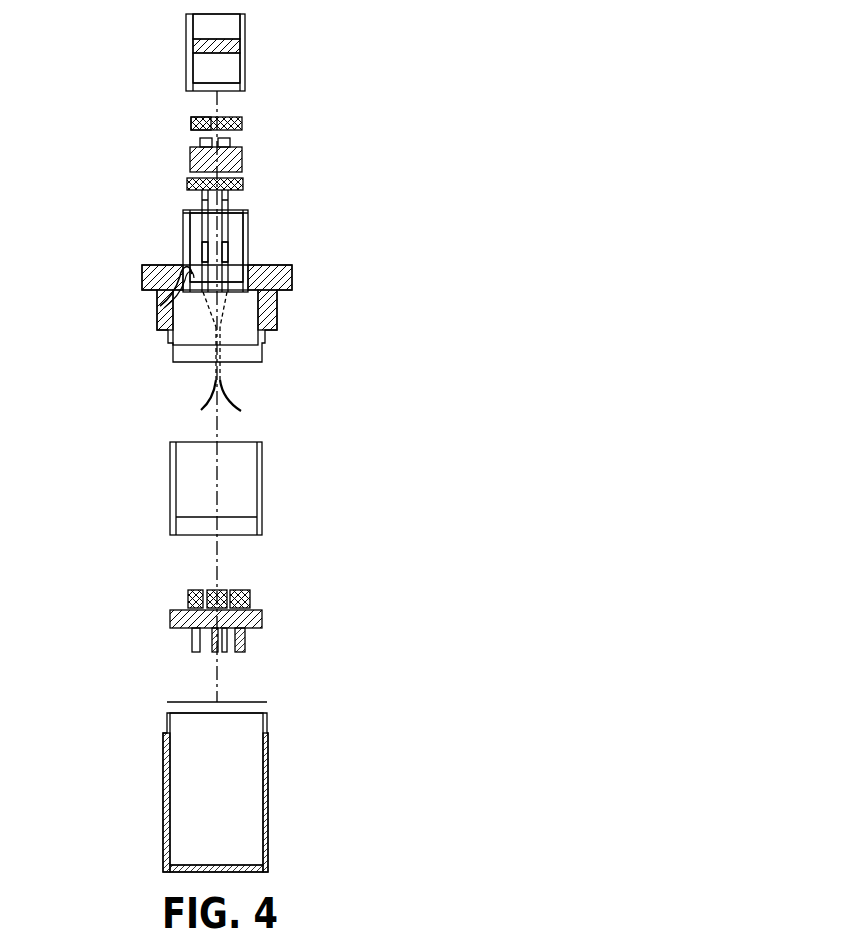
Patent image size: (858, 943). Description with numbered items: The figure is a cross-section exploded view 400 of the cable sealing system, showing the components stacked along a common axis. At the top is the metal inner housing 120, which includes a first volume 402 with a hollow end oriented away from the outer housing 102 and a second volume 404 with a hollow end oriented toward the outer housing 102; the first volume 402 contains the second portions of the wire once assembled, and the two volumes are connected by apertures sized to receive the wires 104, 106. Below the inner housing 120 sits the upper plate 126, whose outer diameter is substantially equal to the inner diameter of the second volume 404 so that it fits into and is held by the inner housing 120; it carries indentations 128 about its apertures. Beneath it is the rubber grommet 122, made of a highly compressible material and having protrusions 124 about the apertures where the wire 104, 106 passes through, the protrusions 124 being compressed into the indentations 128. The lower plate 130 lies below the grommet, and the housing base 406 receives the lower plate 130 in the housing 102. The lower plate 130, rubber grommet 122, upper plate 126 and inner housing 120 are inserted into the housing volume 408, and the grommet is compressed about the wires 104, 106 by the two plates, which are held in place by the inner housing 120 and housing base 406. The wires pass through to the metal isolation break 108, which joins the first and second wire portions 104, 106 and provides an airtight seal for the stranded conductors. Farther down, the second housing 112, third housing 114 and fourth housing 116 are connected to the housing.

The cross-section exploded view 400 is at (748, 98).
The inner housing 120 is at (245, 25).
The first volume 402 is at (200, 25).
The second volume 404 is at (200, 70).
The upper plate 126 is at (242, 124).
The indentations 128 is at (193, 128).
The rubber grommet 122 is at (240, 160).
The protrusions 124 is at (203, 143).
The lower plate 130 is at (245, 185).
The second portions of a wire 106 is at (213, 222).
The metal isolation break 108 is at (203, 248).
The housing volume 408 is at (195, 222).
The housing base 406 is at (160, 305).
The outer housing 102 is at (277, 317).
The first portions of a wire 104 is at (208, 403).
The third housing 114 is at (262, 487).
The fourth housing 116 is at (262, 623).
The second housing 112 is at (268, 815).